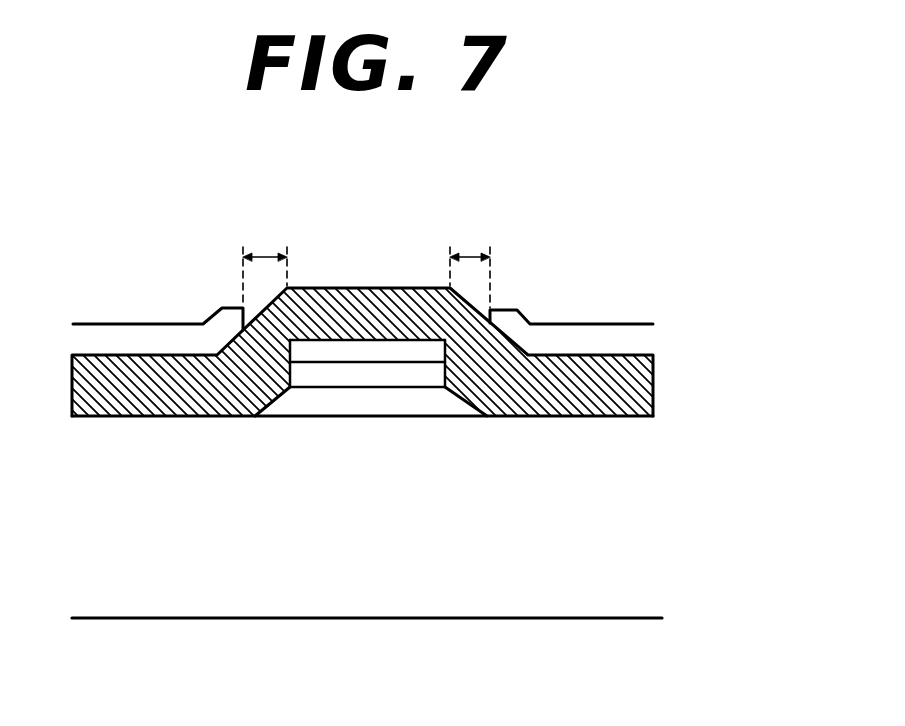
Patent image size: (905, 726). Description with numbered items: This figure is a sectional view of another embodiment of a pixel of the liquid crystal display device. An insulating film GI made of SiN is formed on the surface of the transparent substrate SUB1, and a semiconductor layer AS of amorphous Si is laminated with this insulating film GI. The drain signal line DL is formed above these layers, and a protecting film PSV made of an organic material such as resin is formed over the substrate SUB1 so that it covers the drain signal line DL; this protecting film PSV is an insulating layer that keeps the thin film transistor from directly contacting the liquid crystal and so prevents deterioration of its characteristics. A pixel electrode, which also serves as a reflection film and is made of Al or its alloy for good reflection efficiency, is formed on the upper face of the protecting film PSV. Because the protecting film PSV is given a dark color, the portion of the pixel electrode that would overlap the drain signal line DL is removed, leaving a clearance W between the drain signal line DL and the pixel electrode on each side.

The clearance W is at (366, 253).
The drain signal line DL is at (364, 352).
The protecting film PSV is at (632, 383).
The transparent substrate SUB1 is at (607, 515).
The insulating film GI is at (328, 403).
The semiconductor layer AS is at (425, 377).